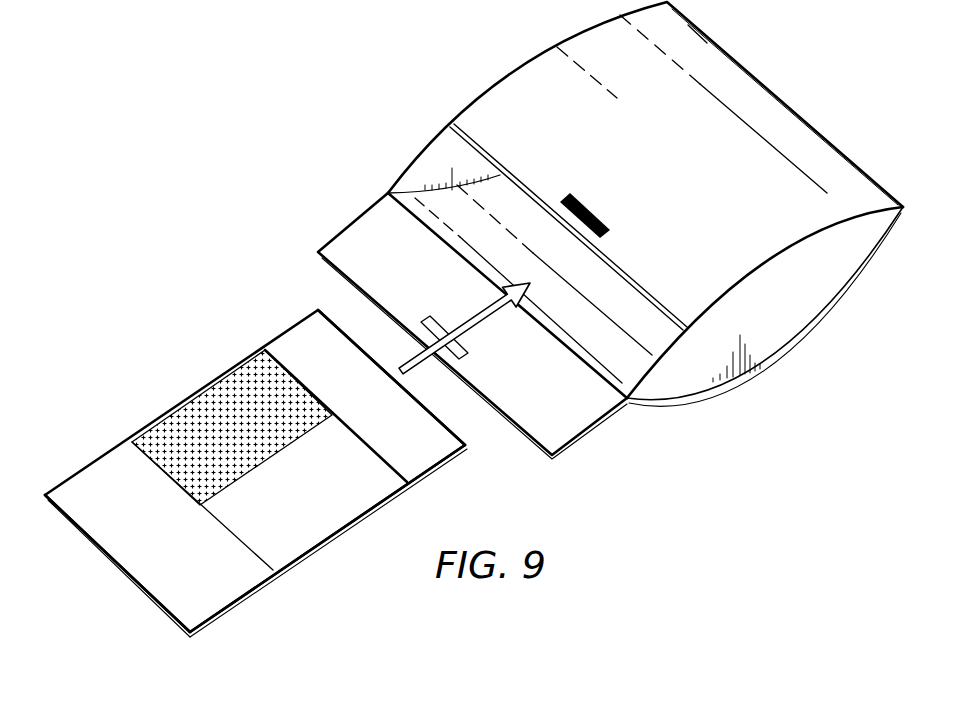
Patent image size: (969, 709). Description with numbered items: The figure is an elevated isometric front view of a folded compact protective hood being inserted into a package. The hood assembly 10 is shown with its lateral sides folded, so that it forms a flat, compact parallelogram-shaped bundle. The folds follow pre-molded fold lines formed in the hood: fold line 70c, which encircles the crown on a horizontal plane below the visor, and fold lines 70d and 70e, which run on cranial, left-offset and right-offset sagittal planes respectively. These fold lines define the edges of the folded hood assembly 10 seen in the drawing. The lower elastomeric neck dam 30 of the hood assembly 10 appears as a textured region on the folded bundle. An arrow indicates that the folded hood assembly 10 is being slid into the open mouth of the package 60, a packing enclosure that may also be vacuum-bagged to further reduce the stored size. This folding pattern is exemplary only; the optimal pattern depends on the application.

The hood assembly 10 is at (298, 473).
The neck dam 30 is at (190, 422).
The package 60 is at (765, 84).
The fold line 70c is at (373, 507).
The fold line 70d is at (447, 426).
The fold line 70e is at (160, 612).